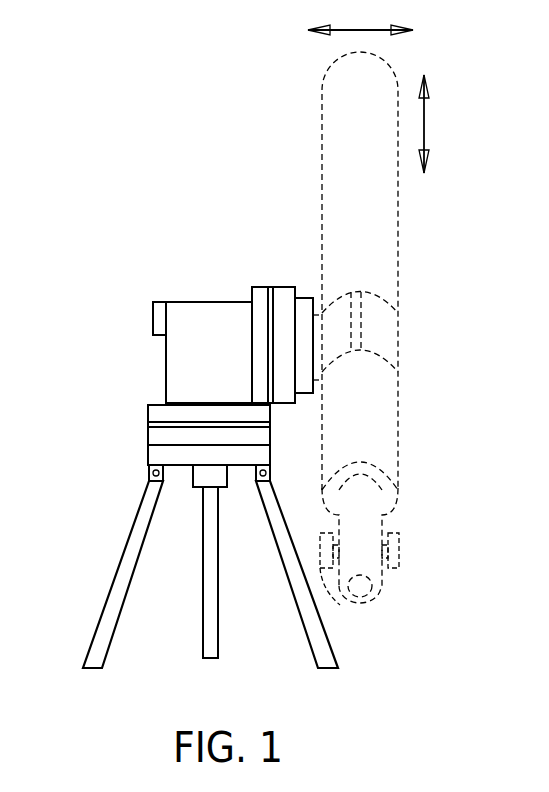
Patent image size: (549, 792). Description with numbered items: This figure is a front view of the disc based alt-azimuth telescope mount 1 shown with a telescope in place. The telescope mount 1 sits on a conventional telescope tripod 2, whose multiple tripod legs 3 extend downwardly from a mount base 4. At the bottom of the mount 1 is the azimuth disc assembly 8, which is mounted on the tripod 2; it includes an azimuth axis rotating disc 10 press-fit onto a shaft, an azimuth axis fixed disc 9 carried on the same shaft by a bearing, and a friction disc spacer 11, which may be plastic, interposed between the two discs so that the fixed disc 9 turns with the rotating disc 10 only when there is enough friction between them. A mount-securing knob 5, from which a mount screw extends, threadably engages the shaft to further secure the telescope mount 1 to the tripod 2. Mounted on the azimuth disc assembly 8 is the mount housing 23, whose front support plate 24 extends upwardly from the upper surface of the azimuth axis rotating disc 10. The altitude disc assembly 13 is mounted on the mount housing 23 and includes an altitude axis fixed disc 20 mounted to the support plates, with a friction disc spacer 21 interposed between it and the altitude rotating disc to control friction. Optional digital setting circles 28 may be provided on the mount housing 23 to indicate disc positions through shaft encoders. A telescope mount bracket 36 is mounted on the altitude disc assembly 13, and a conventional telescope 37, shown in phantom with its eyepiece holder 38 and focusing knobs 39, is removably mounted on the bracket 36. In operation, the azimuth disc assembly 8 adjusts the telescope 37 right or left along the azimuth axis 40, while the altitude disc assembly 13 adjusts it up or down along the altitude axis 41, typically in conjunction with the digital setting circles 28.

The disc based alt-azimuth telescope mount 1 is at (136, 248).
The telescope tripod 2 is at (133, 468).
The tripod legs 3 is at (103, 648).
The mount base 4 is at (173, 466).
The mount-securing knob 5 is at (225, 483).
The azimuth disc assembly 8 is at (128, 380).
The azimuth axis fixed disc 9 is at (148, 437).
The azimuth axis rotating disc 10 is at (148, 407).
The friction disc spacer 11 is at (148, 427).
The altitude disc assembly 13 is at (257, 212).
The altitude axis fixed disc 20 is at (268, 334).
The friction disc spacer 21 is at (273, 403).
The mount housing 23 is at (150, 345).
The front support plate 24 is at (222, 379).
The digital setting circles 28 is at (152, 305).
The telescope mount bracket 36 is at (306, 296).
The telescope 37 is at (390, 278).
The eyepiece holder 38 is at (382, 520).
The focusing knobs 39 is at (399, 558).
The azimuth axis 40 is at (360, 30).
The altitude axis 41 is at (424, 125).